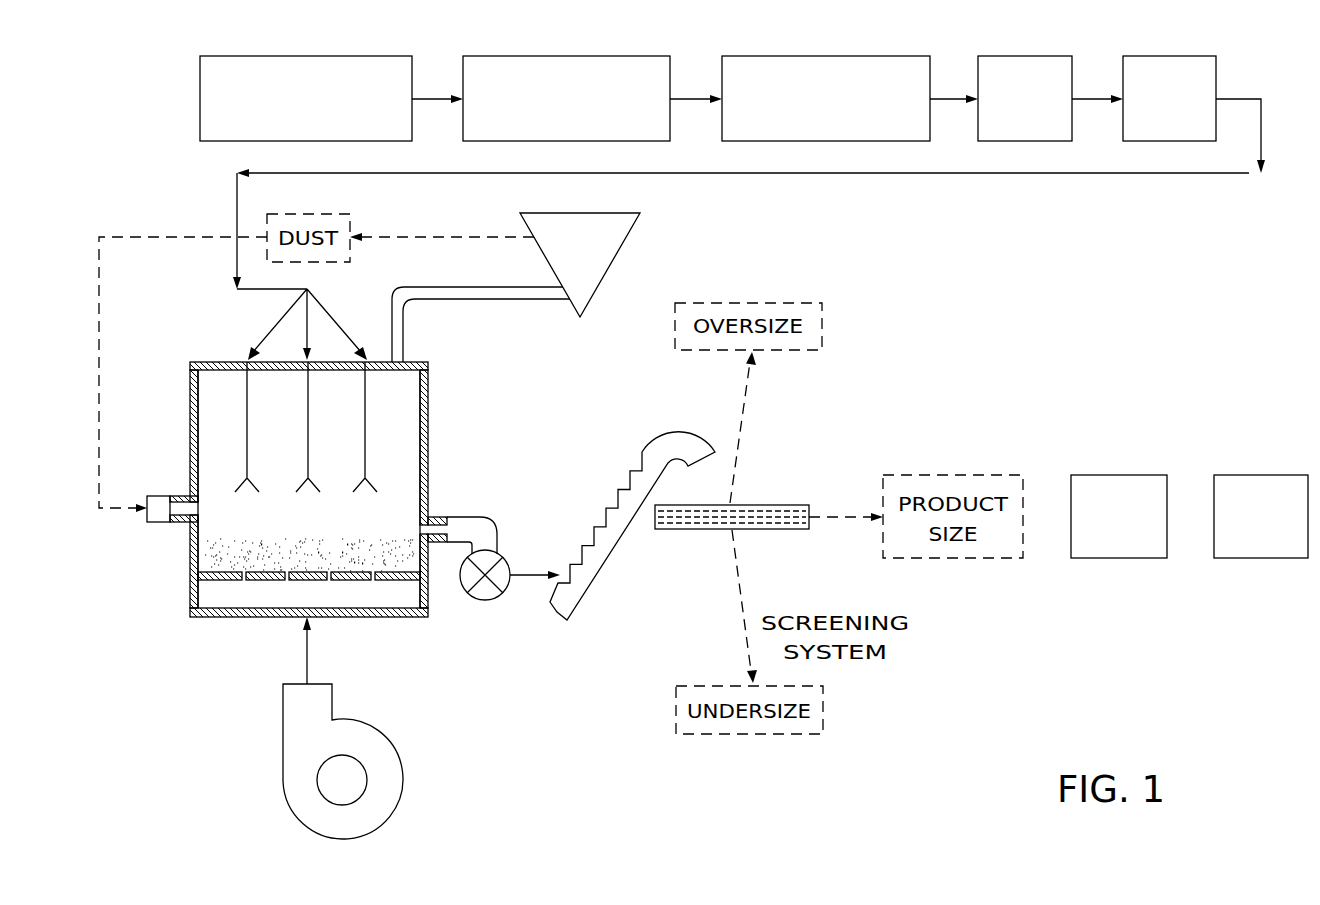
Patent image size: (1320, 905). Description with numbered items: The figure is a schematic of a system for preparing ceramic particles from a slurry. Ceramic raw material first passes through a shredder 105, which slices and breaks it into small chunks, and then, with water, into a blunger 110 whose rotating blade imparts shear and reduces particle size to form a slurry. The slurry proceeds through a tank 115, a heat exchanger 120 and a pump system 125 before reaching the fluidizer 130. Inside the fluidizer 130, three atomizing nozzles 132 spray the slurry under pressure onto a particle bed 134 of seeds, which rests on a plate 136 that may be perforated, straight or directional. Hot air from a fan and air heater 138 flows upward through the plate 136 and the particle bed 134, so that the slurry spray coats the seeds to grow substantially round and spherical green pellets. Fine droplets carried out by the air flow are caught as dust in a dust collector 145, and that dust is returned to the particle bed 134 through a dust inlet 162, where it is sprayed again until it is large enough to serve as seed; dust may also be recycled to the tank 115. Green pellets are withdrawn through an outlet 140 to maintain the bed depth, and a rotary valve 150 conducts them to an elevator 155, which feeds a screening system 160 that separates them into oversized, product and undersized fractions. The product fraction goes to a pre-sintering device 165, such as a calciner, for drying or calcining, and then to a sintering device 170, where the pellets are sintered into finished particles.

The shredder 105 is at (286, 112).
The blunger 110 is at (546, 112).
The tank 115 is at (806, 112).
The heat exchanger 120 is at (1005, 112).
The pump system 125 is at (1150, 112).
The fluidizer 130 is at (219, 347).
The atomizing nozzle 132 is at (240, 480).
The particle bed 134 is at (258, 563).
The plate 136 is at (397, 580).
The fan and air heater 138 is at (284, 800).
The outlet 140 is at (423, 530).
The dust collector 145 is at (560, 260).
The rotary valve 150 is at (486, 600).
The elevator 155 is at (557, 613).
The screening system 160 is at (795, 530).
The dust inlet 162 is at (161, 524).
The pre-sintering device 165 is at (1099, 530).
The sintering device 170 is at (1241, 530).